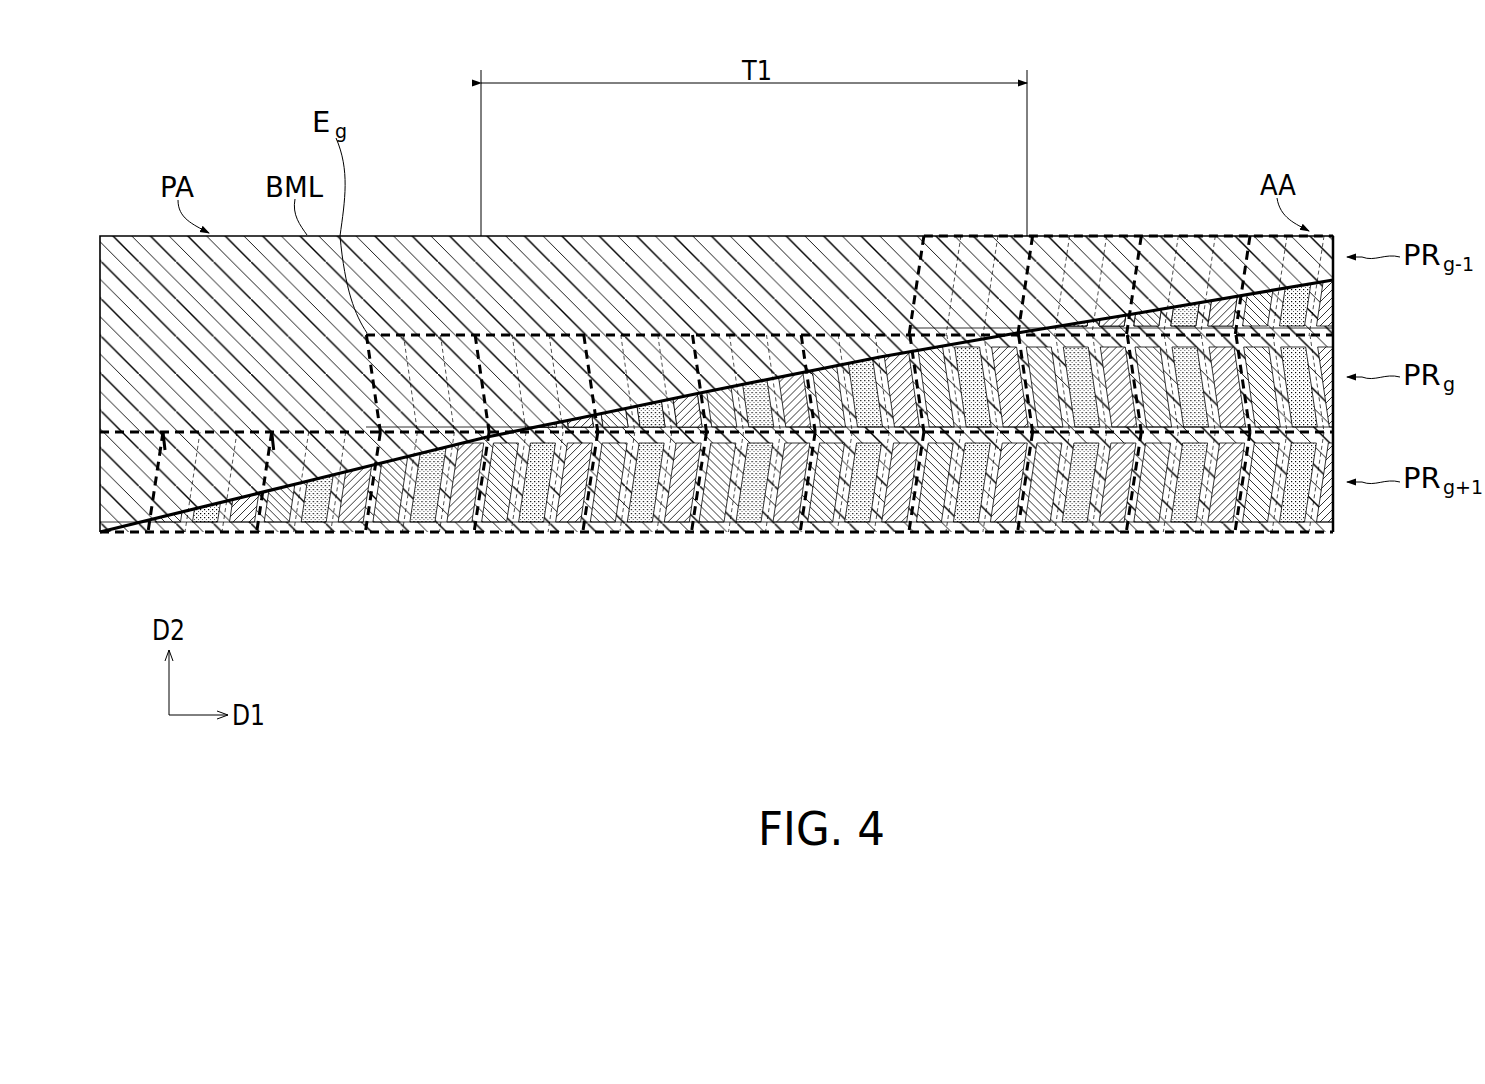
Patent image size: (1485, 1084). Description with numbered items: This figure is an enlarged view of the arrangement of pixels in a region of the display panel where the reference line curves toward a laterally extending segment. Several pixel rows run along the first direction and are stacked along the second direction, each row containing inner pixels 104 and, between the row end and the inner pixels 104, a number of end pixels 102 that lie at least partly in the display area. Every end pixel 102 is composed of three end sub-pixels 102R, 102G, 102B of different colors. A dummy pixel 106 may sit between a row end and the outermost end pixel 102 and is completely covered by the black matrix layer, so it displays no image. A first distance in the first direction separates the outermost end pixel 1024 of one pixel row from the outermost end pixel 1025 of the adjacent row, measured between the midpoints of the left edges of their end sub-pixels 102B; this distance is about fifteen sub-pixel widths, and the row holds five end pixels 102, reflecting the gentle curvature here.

The end pixel 102 is at (968, 333).
The outermost end pixel 1024 is at (707, 187).
The outermost end pixel 1025 is at (1268, 87).
The end sub-pixel 102B is at (490, 333).
The end sub-pixel 102G is at (527, 333).
The end sub-pixel 102R is at (566, 333).
The inner pixel 104 is at (1115, 322).
The dummy pixel 106 is at (400, 333).